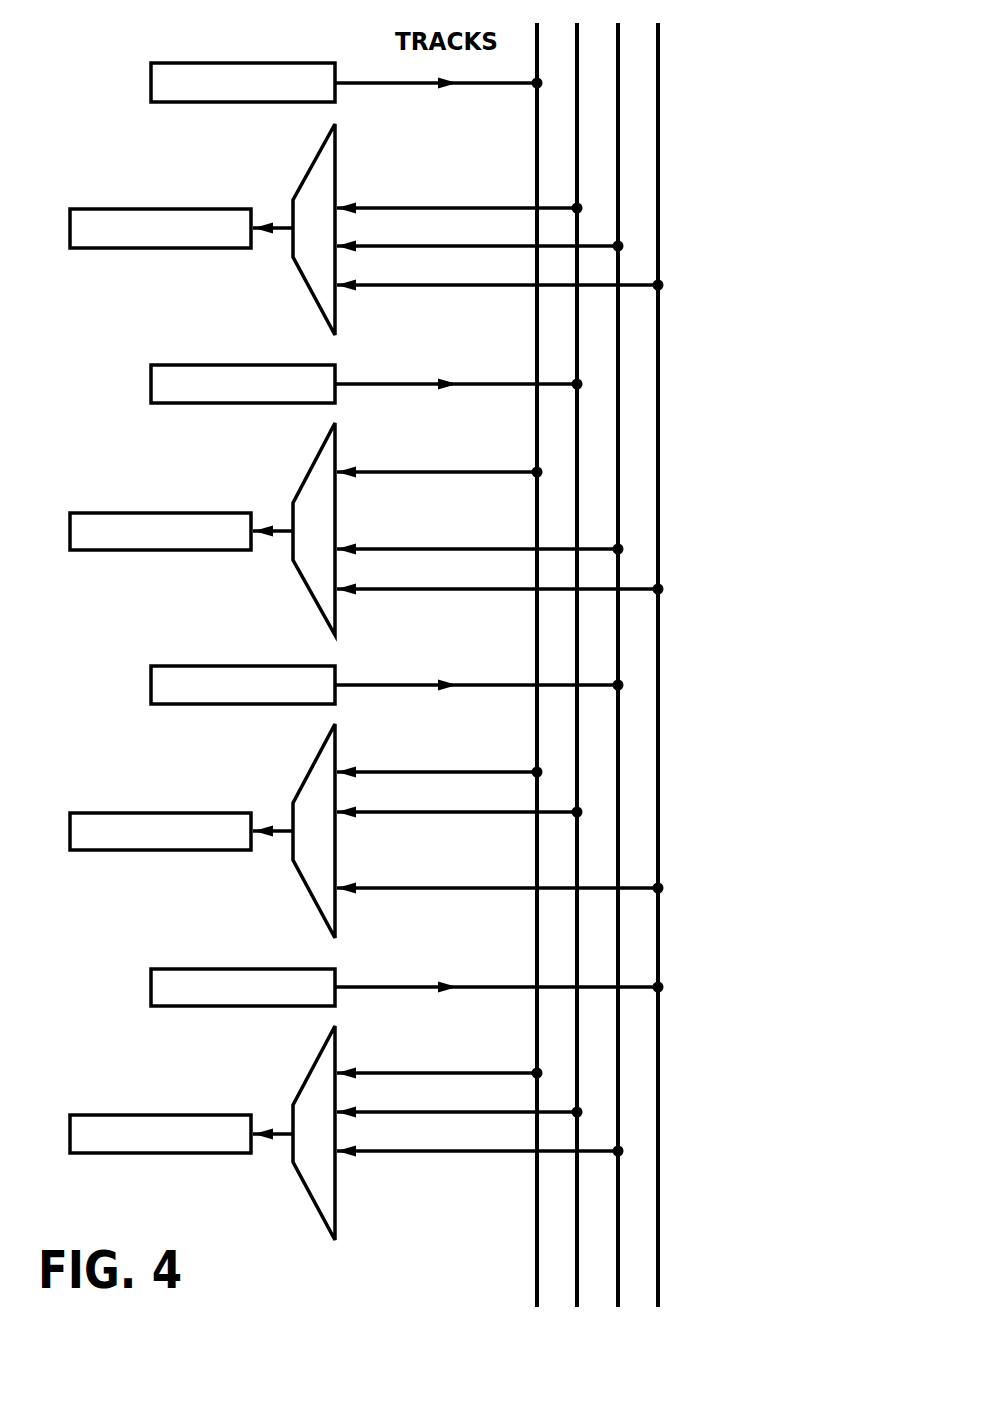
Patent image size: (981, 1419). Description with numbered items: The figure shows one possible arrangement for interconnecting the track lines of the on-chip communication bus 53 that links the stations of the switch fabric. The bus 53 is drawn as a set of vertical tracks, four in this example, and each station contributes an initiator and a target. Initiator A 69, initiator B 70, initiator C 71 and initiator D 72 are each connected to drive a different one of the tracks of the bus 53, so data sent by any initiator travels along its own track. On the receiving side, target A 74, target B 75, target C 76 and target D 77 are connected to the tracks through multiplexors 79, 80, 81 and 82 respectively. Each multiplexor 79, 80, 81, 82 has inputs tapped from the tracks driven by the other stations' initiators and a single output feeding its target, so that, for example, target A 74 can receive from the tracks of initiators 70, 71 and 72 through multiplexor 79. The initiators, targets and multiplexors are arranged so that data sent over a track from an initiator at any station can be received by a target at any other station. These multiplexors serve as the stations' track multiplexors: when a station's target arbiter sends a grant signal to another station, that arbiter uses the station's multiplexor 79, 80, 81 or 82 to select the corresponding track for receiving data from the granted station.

The on-chip communication bus 53 is at (704, 149).
The initiator 69 is at (225, 63).
The initiator 70 is at (225, 365).
The initiator 71 is at (225, 666).
The initiator 72 is at (225, 969).
The target 74 is at (142, 209).
The target 75 is at (142, 513).
The target 76 is at (142, 813).
The target 77 is at (142, 1115).
The multiplexor 79 is at (311, 175).
The multiplexor 80 is at (309, 474).
The multiplexor 81 is at (309, 774).
The multiplexor 82 is at (309, 1076).